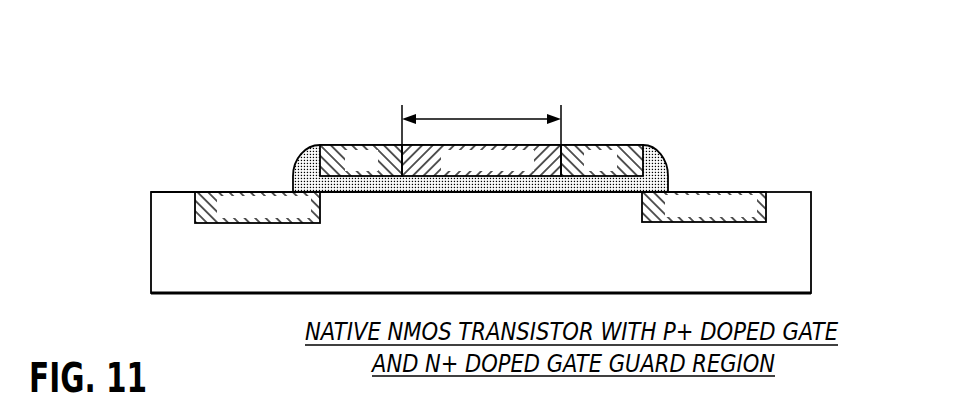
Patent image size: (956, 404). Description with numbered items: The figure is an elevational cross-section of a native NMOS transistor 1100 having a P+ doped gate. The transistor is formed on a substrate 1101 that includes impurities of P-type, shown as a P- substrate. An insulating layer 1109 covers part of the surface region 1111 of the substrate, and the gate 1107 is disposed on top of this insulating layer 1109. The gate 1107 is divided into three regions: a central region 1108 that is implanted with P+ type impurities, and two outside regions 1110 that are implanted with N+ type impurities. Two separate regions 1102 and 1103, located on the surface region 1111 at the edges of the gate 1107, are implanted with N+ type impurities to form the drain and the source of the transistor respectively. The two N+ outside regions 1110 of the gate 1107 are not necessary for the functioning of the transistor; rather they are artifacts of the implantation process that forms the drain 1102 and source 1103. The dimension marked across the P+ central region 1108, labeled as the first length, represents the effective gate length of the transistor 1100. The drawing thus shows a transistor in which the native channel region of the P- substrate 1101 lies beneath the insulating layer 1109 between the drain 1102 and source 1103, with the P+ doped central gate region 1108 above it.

The native NMOS transistor 1100 is at (246, 86).
The substrate 1101 is at (481, 242).
The drain region 1102 is at (268, 218).
The source region 1103 is at (712, 216).
The gate 1107 is at (481, 107).
The central region of gate 1108 is at (490, 173).
The insulating layer 1109 is at (667, 182).
The outside regions of gate 1110 is at (333, 150).
The surface region 1111 is at (172, 192).